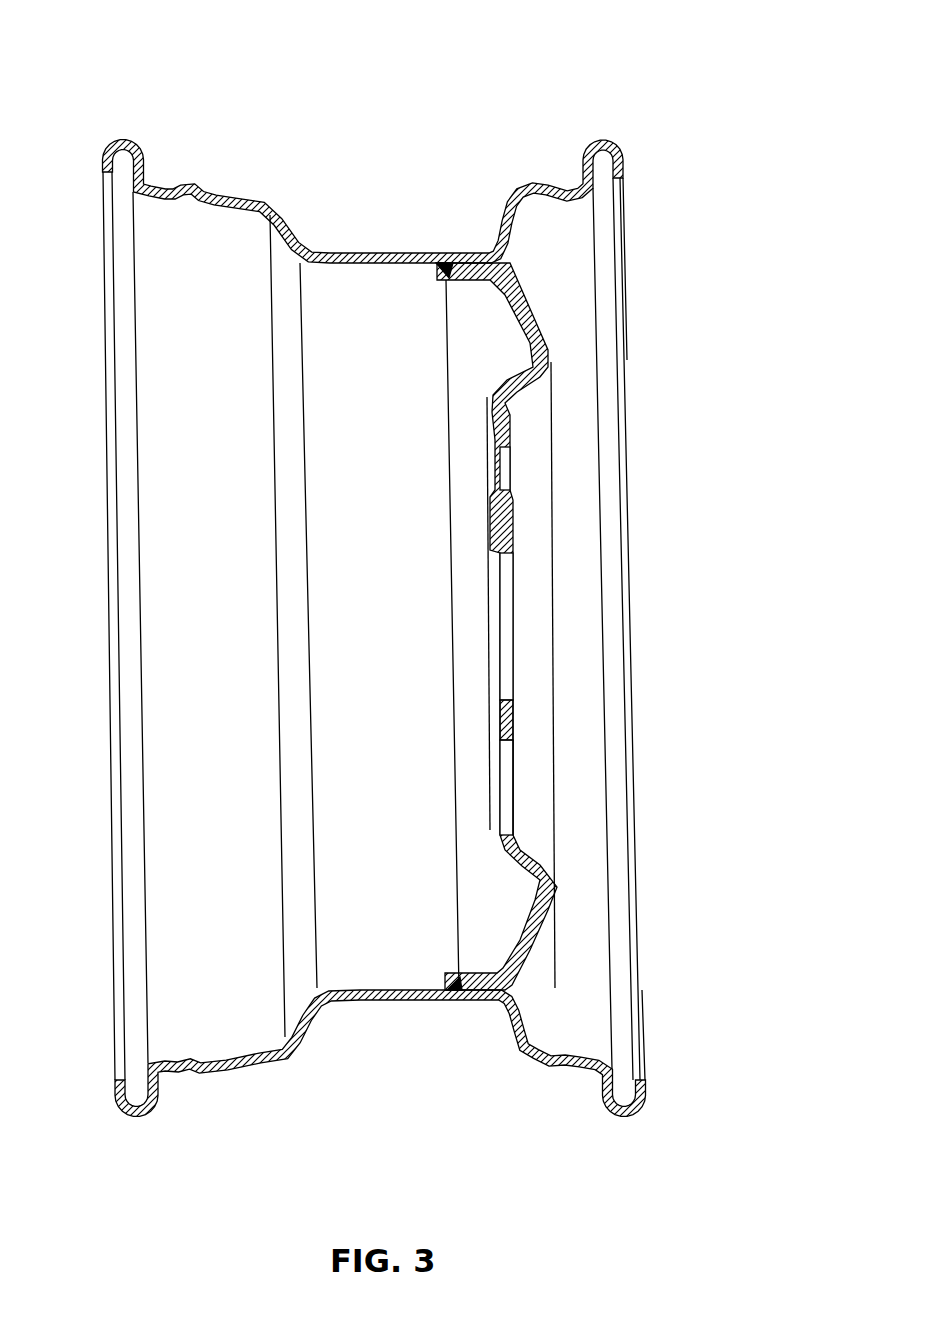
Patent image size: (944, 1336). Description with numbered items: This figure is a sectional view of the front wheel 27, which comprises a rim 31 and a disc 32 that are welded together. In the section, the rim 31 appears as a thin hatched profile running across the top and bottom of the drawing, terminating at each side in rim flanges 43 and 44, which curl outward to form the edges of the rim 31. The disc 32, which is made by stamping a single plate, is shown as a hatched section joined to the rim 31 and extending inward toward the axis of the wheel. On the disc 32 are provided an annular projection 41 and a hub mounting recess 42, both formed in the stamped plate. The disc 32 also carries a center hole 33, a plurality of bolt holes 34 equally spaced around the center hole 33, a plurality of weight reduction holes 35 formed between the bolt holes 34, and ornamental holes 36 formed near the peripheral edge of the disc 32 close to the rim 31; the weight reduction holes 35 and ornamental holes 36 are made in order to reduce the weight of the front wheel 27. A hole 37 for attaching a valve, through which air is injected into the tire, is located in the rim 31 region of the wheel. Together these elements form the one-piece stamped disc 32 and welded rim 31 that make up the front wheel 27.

The front wheel 27 is at (317, 132).
The rim 31 is at (374, 250).
The disc 32 is at (520, 547).
The center hole 33 is at (513, 680).
The bolt holes 34 is at (510, 462).
The weight reduction holes 35 is at (513, 750).
The ornamental holes 36 is at (530, 300).
The hole for attaching a valve 37 is at (517, 1020).
The annular projection 41 is at (547, 350).
The hub mounting recess 42 is at (487, 518).
The rim flange 43 is at (600, 138).
The rim flange 44 is at (122, 138).